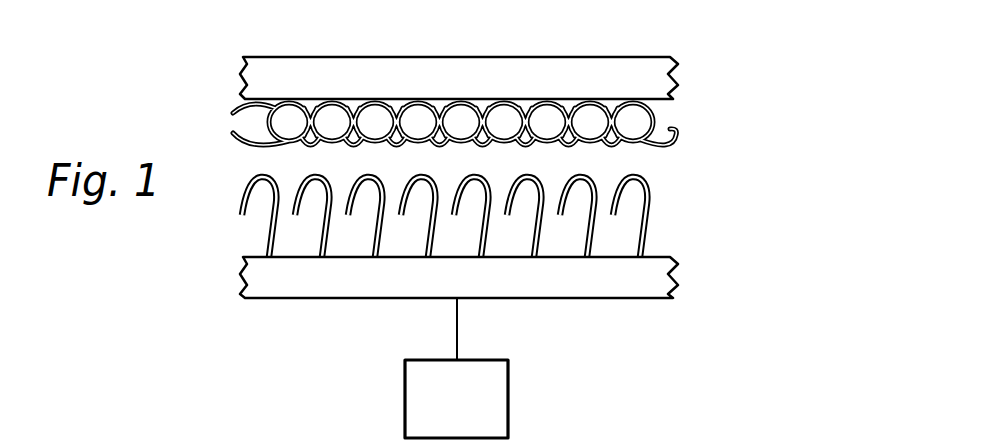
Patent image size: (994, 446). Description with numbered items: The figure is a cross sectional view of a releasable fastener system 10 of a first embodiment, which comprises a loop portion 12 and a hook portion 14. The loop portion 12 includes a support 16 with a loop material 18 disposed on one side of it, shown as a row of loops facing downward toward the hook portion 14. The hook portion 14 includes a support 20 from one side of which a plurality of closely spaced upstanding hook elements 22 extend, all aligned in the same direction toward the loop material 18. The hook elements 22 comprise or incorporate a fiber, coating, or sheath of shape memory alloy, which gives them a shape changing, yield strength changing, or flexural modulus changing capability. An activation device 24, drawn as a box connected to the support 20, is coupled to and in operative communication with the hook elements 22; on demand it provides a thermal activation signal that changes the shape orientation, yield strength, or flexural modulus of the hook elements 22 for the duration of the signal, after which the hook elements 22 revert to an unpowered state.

The releasable fastener system 10 is at (752, 69).
The loop portion 12 is at (194, 98).
The hook portion 14 is at (194, 260).
The support 16 is at (653, 82).
The loop material 18 is at (611, 147).
The support 20 is at (636, 282).
The hook elements 22 is at (650, 205).
The activation device 24 is at (508, 393).